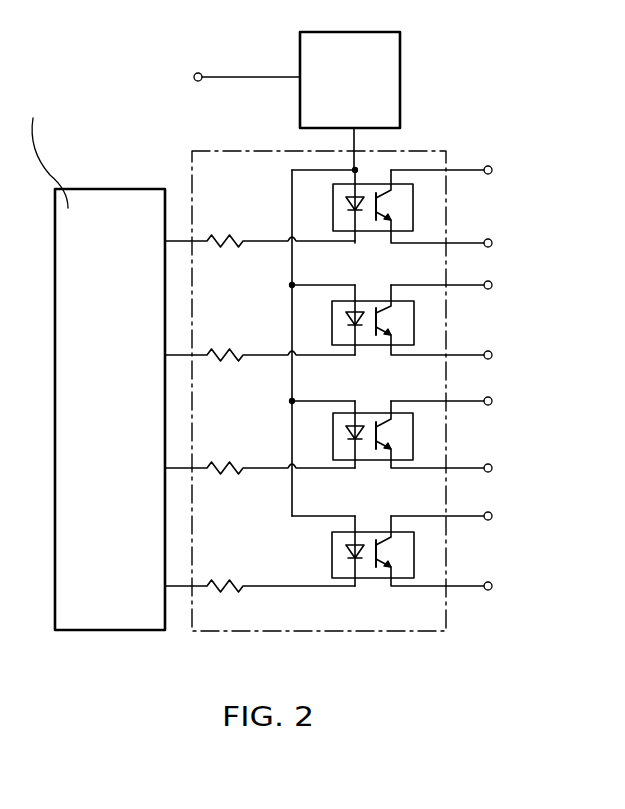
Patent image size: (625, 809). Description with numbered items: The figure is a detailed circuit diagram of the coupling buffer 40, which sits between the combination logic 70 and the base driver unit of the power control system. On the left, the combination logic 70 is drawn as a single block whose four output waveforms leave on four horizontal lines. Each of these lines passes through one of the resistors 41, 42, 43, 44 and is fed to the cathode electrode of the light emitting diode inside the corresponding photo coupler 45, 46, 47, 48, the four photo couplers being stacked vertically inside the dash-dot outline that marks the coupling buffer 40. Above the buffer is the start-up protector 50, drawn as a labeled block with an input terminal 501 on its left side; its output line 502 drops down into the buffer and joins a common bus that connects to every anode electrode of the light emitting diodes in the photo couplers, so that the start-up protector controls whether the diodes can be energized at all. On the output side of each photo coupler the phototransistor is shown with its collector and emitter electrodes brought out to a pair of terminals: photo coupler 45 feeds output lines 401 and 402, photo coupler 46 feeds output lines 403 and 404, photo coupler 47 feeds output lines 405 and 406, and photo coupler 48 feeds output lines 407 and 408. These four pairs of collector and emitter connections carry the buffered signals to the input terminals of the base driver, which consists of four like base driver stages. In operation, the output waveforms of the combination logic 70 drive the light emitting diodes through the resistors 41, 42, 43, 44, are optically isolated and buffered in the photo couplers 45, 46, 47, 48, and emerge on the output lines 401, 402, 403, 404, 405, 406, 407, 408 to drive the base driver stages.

The coupling buffer 40 is at (232, 150).
The resistor 41 is at (260, 233).
The resistor 42 is at (260, 347).
The resistor 43 is at (260, 460).
The resistor 44 is at (260, 578).
The photo coupler 45 is at (370, 233).
The photo coupler 46 is at (372, 346).
The photo coupler 47 is at (372, 461).
The photo coupler 48 is at (372, 579).
The start-up protector 50 is at (348, 31).
The combination logic 70 is at (93, 189).
The output line 401 is at (504, 171).
The output line 402 is at (504, 244).
The output line 403 is at (504, 286).
The output line 404 is at (504, 356).
The output line 405 is at (504, 402).
The output line 406 is at (504, 469).
The output line 407 is at (504, 517).
The output line 408 is at (504, 587).
The start-up protector input terminal 501 is at (243, 66).
The output line of start-up protector 502 is at (358, 144).